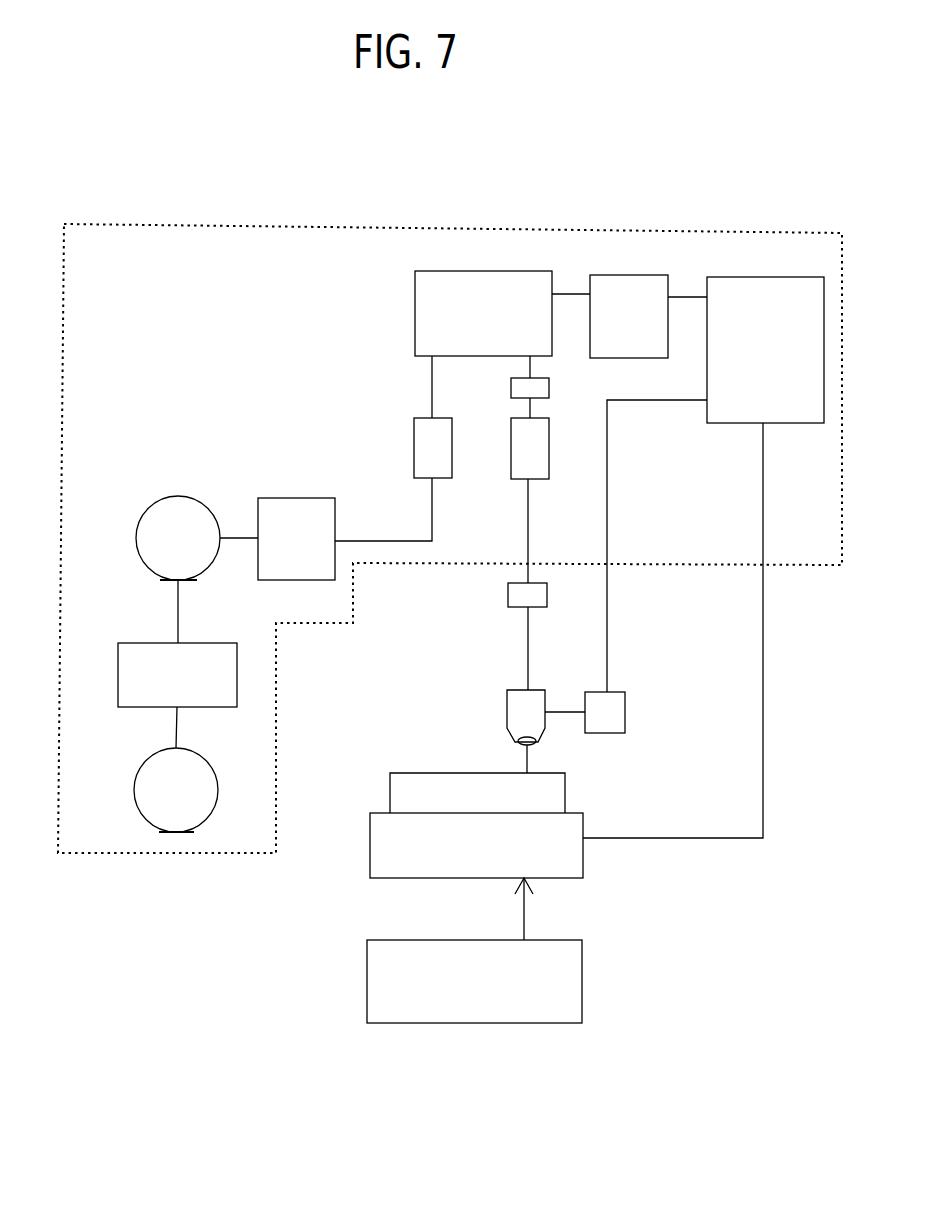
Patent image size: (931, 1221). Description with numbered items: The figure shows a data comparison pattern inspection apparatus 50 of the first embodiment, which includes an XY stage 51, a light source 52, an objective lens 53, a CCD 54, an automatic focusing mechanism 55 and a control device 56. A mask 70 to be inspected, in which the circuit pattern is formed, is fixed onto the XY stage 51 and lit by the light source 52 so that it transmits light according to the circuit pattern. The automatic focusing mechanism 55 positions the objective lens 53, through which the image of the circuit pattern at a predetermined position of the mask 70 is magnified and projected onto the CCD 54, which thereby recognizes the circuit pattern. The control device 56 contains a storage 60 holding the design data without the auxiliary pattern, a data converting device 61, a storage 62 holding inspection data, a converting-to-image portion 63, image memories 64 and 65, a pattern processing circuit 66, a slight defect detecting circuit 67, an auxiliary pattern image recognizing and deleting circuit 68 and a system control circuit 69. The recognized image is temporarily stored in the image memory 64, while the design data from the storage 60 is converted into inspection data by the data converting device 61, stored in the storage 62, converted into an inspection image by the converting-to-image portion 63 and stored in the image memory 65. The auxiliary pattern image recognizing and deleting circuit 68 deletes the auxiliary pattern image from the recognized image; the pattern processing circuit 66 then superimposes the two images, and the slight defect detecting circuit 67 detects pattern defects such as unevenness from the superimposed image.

The data comparison pattern inspection apparatus 50 is at (700, 226).
The XY stage 51 is at (583, 857).
The light source 52 is at (583, 985).
The objective lens 53 is at (545, 705).
The CCD 54 is at (508, 592).
The automatic focusing mechanism 55 is at (625, 712).
The control device 56 is at (780, 237).
The storage 60 is at (146, 775).
The data converting device 61 is at (118, 670).
The storage 62 is at (140, 524).
The converting-to-image portion 63 is at (296, 498).
The image memory 64 is at (549, 470).
The image memory 65 is at (414, 447).
The pattern processing circuit 66 is at (415, 300).
The slight defect detecting circuit 67 is at (632, 275).
The auxiliary pattern image recognizing and deleting circuit 68 is at (549, 388).
The system control circuit 69 is at (782, 277).
The mask 70 is at (390, 777).